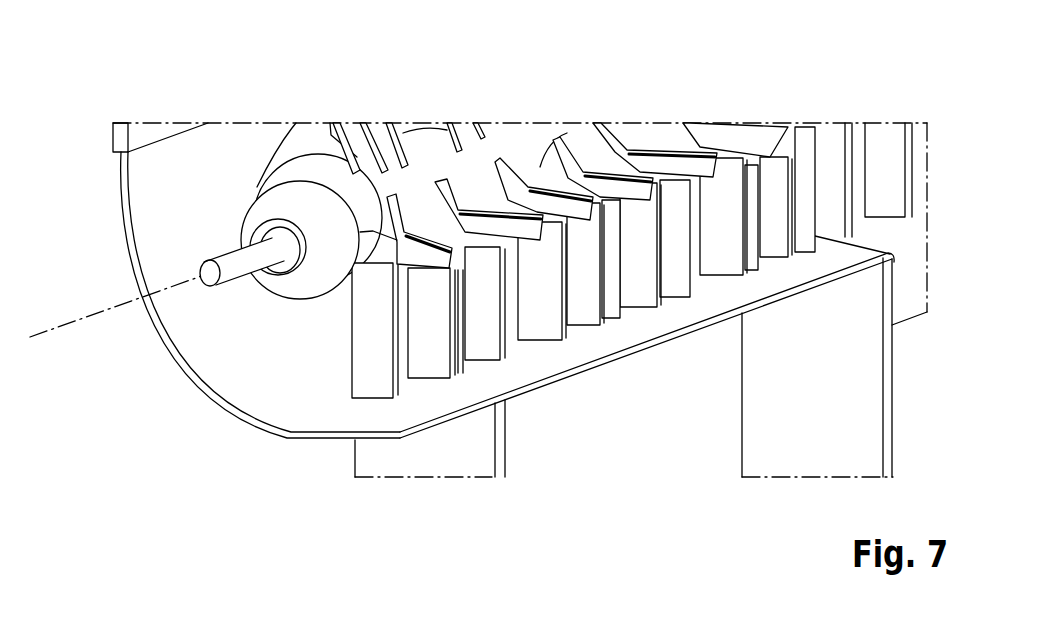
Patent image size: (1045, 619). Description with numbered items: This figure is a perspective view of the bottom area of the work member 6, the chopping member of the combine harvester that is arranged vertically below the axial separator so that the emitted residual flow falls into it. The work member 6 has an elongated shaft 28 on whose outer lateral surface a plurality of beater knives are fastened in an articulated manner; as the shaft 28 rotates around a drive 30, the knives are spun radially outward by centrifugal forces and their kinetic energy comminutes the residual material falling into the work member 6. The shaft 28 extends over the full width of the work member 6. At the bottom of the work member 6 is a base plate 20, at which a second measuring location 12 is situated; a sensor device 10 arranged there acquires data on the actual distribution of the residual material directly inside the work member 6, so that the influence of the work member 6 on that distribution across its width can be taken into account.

The work member 6 is at (478, 242).
The sensor device 10 is at (246, 298).
The second measuring location 12 is at (246, 298).
The base plate 20 is at (255, 408).
The shaft 28 is at (523, 138).
The drive 30 is at (80, 318).